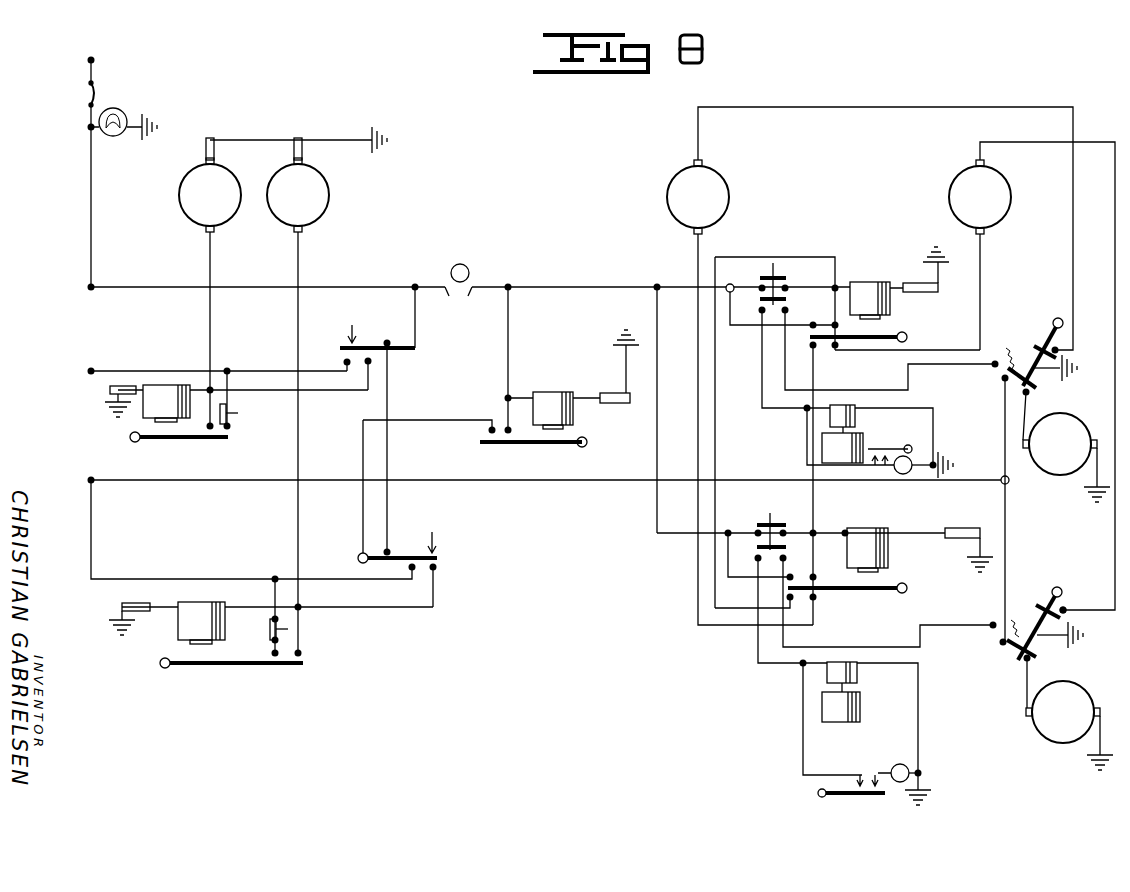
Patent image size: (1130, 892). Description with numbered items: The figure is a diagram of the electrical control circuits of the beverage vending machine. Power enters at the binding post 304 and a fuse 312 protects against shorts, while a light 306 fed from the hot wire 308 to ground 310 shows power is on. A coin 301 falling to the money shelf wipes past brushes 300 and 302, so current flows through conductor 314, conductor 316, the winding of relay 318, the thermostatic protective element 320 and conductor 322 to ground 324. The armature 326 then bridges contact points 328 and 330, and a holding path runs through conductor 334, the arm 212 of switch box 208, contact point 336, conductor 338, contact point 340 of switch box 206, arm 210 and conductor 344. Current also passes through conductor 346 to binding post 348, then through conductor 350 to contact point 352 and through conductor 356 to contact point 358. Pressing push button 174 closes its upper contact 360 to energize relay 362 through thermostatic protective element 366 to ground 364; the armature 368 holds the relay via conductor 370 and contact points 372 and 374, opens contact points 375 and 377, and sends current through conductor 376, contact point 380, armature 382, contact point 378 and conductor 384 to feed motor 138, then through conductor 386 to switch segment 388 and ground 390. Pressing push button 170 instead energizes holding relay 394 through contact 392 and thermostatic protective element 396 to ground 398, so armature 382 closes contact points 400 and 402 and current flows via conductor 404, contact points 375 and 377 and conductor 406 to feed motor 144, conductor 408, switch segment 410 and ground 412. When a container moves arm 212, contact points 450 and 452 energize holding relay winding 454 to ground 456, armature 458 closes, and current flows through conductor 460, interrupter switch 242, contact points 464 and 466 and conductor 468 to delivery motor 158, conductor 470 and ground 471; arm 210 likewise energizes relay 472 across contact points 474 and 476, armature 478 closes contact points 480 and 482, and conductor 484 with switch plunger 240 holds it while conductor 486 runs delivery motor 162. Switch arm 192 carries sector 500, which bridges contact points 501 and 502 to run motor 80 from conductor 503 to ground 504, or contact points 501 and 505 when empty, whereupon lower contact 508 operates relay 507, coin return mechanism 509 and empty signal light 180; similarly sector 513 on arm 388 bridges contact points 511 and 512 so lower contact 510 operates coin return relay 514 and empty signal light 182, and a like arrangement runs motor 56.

The binding post 304 is at (95, 58).
The fuse 312 is at (88, 94).
The light 306 is at (122, 110).
The ground 310 is at (158, 127).
The hot wire 308 is at (91, 215).
The conductor 470 is at (290, 140).
The ground 471 is at (385, 135).
The delivery motor 158 is at (185, 215).
The delivery motor 162 is at (328, 205).
The conductor 314 is at (356, 287).
The conductor 334 is at (412, 289).
The switch box 208 is at (417, 351).
The switch arm 212 is at (350, 330).
The contact point 336 is at (398, 322).
The contact point 450 is at (347, 360).
The contact point 452 is at (368, 364).
The brush 300 is at (448, 297).
The brush 302 is at (469, 294).
The coin 301 is at (468, 268).
The conductor 346 is at (585, 287).
The binding post 348 is at (658, 284).
The conductor 350 is at (660, 292).
The conductor 356 is at (657, 432).
The conductor 316 is at (510, 355).
The relay 318 is at (547, 392).
The thermostatic protective element 320 is at (614, 404).
The conductor 322 is at (626, 370).
The ground 324 is at (620, 340).
The conductor 338 is at (396, 418).
The conductor 344 is at (363, 462).
The contact point 328 is at (489, 433).
The contact point 330 is at (507, 434).
The armature 326 is at (580, 447).
The conductor 503 is at (620, 483).
The conductor 486 is at (297, 505).
The conductor 484 is at (140, 579).
The relay 472 is at (205, 602).
The switch box 206 is at (361, 546).
The switch arm 210 is at (440, 557).
The contact point 340 is at (424, 529).
The contact point 476 is at (411, 571).
The contact point 474 is at (435, 571).
The switch plunger 240 is at (270, 630).
The contact point 480 is at (301, 652).
The contact point 482 is at (276, 656).
The armature 478 is at (245, 667).
The conductor 460 is at (110, 371).
The conductor 468 is at (212, 337).
The holding relay winding 454 is at (162, 385).
The ground 456 is at (110, 405).
The interrupter switch 242 is at (234, 413).
The armature 458 is at (168, 441).
The contact point 466 is at (210, 430).
The contact point 464 is at (230, 430).
The conductor 386 is at (928, 107).
The feed motor 138 is at (730, 195).
The feed motor 144 is at (1012, 195).
The conductor 408 is at (1113, 300).
The conductor 406 is at (983, 287).
The conductor 384 is at (714, 628).
The conductor 376 is at (834, 257).
The contact point 352 is at (760, 284).
The push button 174 is at (776, 270).
The upper contact 360 is at (787, 281).
The contact point 374 is at (825, 305).
The contact point 372 is at (815, 322).
The conductor 370 is at (745, 326).
The lower contact 510 is at (761, 340).
The relay 362 is at (875, 282).
The thermostatic protective element 366 is at (918, 293).
The ground 364 is at (936, 258).
The armature 368 is at (908, 338).
The contact point 377 is at (836, 347).
The contact point 375 is at (786, 380).
The coin return relay 514 is at (846, 405).
The conductor 404 is at (822, 440).
The empty signal light 182 is at (912, 465).
The switch segment 388 is at (1036, 352).
The ground 390 is at (1019, 364).
The contact point 511 is at (992, 364).
The contact point 512 is at (1002, 380).
The sector 513 is at (1005, 395).
The motor 56 is at (1075, 432).
The contact point 358 is at (756, 531).
The push button 170 is at (770, 513).
The contact 392 is at (785, 524).
The holding relay 394 is at (880, 528).
The thermostatic protective element 396 is at (968, 528).
The ground 398 is at (980, 561).
The lower contact 508 is at (755, 546).
The contact point 402 is at (792, 575).
The contact point 400 is at (814, 575).
The armature 382 is at (885, 593).
The contact point 378 is at (814, 600).
The contact point 380 is at (787, 597).
The relay 507 is at (827, 673).
The coin return mechanism 509 is at (840, 722).
The empty signal light 180 is at (906, 762).
The contact point 505 is at (990, 624).
The contact point 501 is at (1000, 644).
The switch arm 192 is at (1054, 588).
The switch sector 500 is at (1018, 652).
The switch segment 410 is at (1064, 610).
The ground 412 is at (1070, 648).
The contact point 502 is at (1026, 662).
The motor 80 is at (1078, 692).
The ground 504 is at (1095, 765).